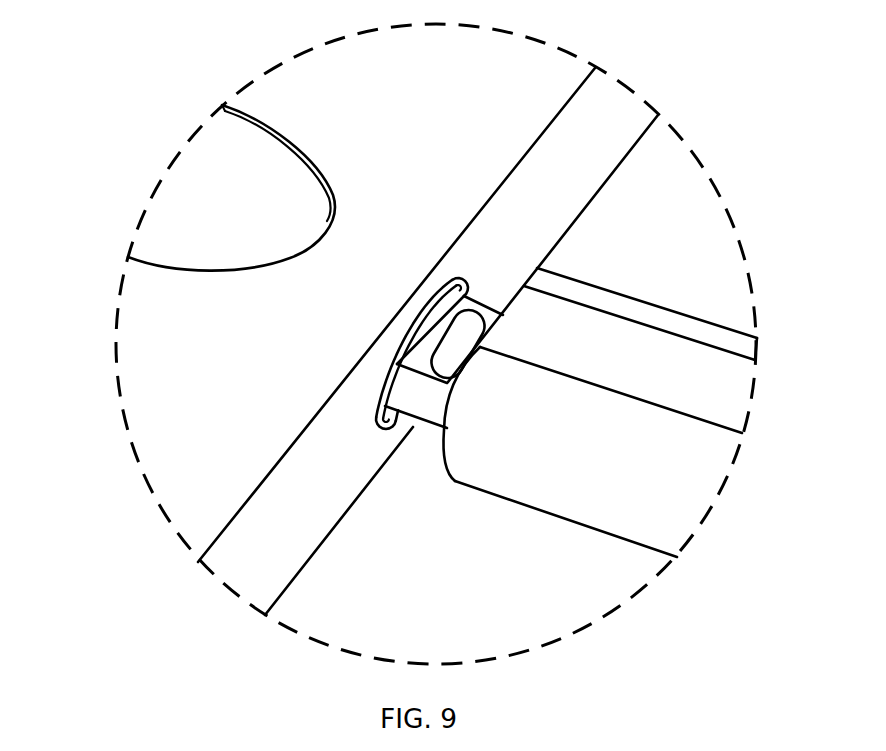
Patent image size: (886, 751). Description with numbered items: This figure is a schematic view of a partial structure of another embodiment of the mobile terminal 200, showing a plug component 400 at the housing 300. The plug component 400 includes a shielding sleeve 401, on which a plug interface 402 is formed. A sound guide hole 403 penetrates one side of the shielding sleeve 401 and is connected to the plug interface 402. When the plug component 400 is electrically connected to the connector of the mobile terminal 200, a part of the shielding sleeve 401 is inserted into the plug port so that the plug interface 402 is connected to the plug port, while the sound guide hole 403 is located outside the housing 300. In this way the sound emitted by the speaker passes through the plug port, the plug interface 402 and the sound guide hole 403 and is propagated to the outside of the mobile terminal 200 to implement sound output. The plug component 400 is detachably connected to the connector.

The mobile terminal 200 is at (141, 96).
The housing 300 is at (277, 540).
The plug component 400 is at (630, 470).
The shielding sleeve 401 is at (409, 387).
The plug interface 402 is at (458, 332).
The sound guide hole 403 is at (470, 312).